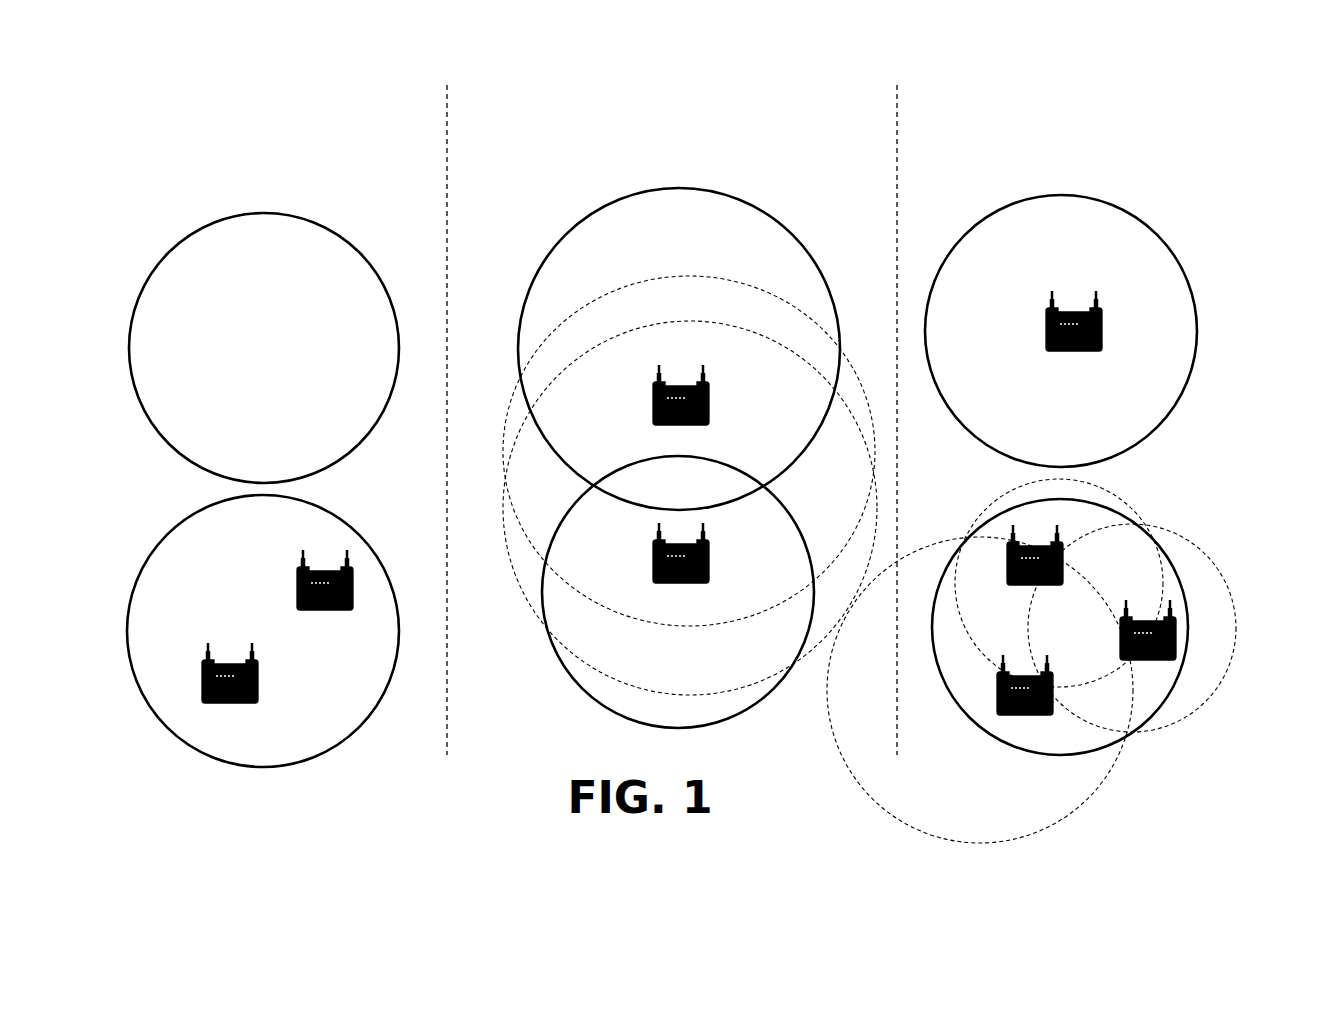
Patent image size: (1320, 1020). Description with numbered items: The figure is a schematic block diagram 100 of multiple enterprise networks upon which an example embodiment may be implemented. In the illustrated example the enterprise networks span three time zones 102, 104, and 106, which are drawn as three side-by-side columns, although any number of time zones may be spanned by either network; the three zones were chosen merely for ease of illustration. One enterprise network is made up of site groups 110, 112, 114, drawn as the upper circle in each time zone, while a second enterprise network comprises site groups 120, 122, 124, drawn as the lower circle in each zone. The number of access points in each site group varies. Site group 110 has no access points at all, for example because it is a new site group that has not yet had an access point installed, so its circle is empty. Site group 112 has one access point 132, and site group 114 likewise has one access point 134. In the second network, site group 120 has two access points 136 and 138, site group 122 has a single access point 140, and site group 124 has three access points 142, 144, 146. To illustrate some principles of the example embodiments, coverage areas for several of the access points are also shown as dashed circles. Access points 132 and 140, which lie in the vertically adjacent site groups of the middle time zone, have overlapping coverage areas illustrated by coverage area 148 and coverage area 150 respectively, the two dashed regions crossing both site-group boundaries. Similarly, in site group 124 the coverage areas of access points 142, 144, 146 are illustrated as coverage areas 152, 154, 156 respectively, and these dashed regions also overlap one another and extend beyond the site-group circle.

The schematic block diagram 100 is at (523, 46).
The time zone 102 is at (220, 153).
The time zone 104 is at (655, 153).
The time zone 106 is at (1086, 149).
The site group 110 is at (247, 261).
The site group 112 is at (663, 256).
The site group 114 is at (1044, 253).
The site group 120 is at (247, 548).
The site group 122 is at (661, 690).
The site group 124 is at (1086, 728).
The access point 132 is at (652, 405).
The access point 134 is at (1045, 330).
The access point 136 is at (201, 684).
The access point 138 is at (296, 590).
The access point 140 is at (652, 563).
The access point 142 is at (997, 690).
The access point 144 is at (1178, 640).
The access point 146 is at (1066, 555).
The coverage area 148 is at (510, 395).
The coverage area 150 is at (822, 588).
The coverage area 152 is at (1100, 765).
The coverage area 154 is at (1200, 706).
The coverage area 156 is at (1115, 495).